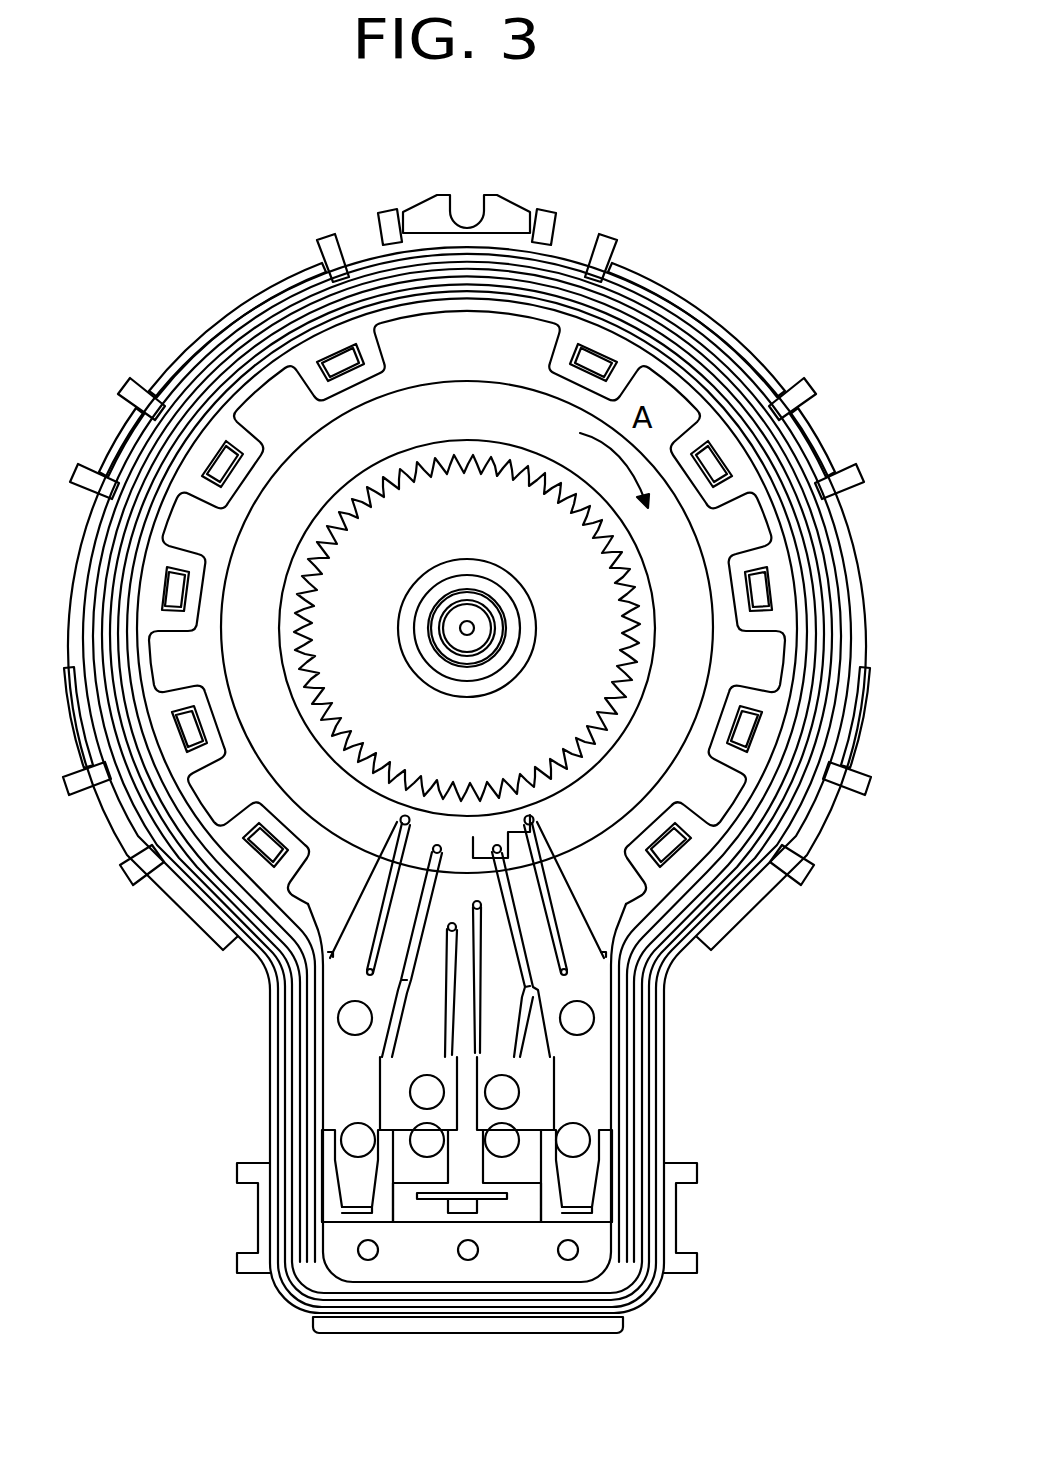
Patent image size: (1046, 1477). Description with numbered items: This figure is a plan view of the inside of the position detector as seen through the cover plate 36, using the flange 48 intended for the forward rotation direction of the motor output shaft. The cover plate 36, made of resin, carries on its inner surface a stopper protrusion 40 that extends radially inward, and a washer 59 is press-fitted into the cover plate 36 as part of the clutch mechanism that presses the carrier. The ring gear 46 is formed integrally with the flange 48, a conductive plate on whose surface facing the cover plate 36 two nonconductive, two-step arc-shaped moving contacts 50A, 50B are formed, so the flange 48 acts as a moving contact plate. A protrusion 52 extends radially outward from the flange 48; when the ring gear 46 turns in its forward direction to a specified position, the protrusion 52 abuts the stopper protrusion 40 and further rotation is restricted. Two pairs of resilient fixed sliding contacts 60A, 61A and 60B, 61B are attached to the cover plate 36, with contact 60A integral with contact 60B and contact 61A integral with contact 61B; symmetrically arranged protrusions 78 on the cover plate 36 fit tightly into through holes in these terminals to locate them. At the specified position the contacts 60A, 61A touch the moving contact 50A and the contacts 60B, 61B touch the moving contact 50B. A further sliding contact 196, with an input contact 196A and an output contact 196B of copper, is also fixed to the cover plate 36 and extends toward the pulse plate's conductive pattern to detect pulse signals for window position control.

The cover plate 36 is at (752, 352).
The stopper protrusion 40 is at (295, 832).
The ring gear 46 is at (630, 642).
The flange 48 is at (705, 613).
The moving contact 50A is at (490, 845).
The moving contact 50B is at (522, 815).
The protrusion 52 is at (325, 842).
The washer 59 is at (600, 663).
The fixed sliding contact 60A is at (523, 923).
The fixed sliding contact 60B is at (557, 887).
The fixed sliding contact 61A is at (436, 845).
The fixed sliding contact 61B is at (397, 843).
The protrusions 78 is at (350, 1128).
The sliding contact 196 is at (135, 988).
The input contact 196A is at (485, 1012).
The output contact 196B is at (440, 974).